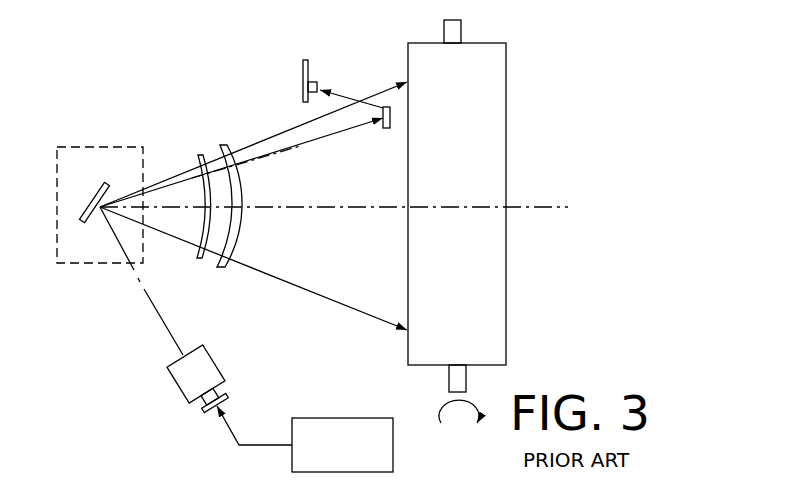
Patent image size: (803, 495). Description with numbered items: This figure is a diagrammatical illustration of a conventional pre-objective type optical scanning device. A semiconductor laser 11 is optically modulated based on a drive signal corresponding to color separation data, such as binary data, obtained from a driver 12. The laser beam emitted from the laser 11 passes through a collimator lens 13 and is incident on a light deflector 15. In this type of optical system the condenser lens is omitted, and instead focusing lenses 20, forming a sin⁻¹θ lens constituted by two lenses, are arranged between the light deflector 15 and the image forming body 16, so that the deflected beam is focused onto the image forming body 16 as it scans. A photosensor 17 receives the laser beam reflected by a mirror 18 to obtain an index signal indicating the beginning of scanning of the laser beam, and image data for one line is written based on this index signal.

The semiconductor laser 11 is at (202, 410).
The driver 12 is at (393, 455).
The collimator lens 13 is at (219, 370).
The light deflector 15 is at (57, 235).
The image forming body 16 is at (522, 139).
The photosensor 17 is at (318, 82).
The mirror 18 is at (388, 128).
The focusing lenses 20 is at (223, 133).